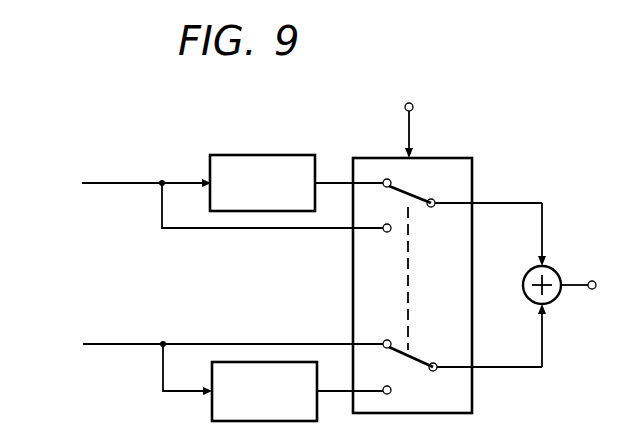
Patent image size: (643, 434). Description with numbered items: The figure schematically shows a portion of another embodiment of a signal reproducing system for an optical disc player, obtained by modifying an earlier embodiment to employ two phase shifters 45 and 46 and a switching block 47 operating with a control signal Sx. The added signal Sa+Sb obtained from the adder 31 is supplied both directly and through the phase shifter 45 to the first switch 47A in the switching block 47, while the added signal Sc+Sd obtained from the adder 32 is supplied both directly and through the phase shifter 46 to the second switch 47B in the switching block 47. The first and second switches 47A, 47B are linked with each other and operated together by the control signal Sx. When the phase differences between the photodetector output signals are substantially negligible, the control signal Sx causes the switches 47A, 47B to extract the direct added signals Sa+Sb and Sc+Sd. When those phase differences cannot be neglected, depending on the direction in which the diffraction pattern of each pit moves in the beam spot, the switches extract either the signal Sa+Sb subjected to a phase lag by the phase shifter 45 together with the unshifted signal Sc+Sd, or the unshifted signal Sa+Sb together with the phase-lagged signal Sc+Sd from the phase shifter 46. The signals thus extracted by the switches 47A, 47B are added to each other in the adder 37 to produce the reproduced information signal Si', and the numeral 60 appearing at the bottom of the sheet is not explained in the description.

The adder 31 is at (212, 194).
The adder 32 is at (214, 357).
The phase shifter 45 is at (229, 155).
The phase shifter 46 is at (212, 371).
The switching block 47 is at (459, 157).
The first switch 47A is at (417, 208).
The second switch 47B is at (418, 357).
The adder 37 is at (525, 291).
The signal processing circuit 60 is at (331, 255).